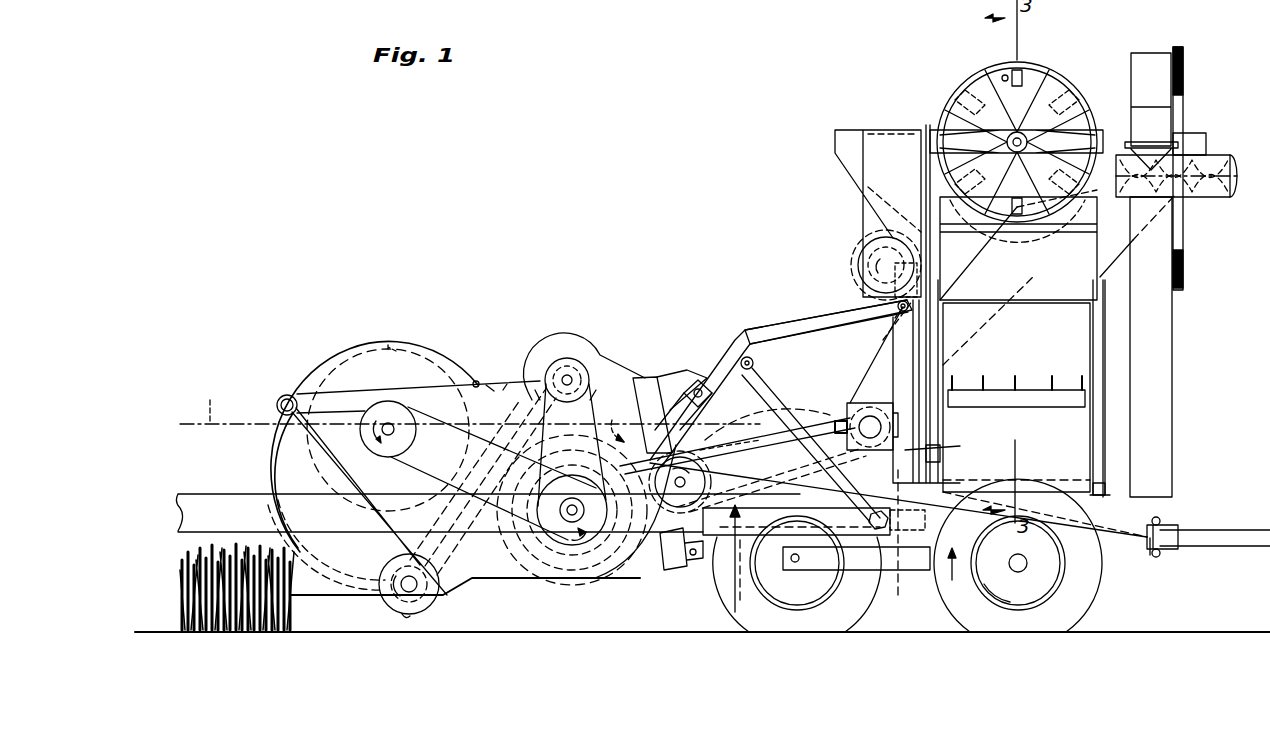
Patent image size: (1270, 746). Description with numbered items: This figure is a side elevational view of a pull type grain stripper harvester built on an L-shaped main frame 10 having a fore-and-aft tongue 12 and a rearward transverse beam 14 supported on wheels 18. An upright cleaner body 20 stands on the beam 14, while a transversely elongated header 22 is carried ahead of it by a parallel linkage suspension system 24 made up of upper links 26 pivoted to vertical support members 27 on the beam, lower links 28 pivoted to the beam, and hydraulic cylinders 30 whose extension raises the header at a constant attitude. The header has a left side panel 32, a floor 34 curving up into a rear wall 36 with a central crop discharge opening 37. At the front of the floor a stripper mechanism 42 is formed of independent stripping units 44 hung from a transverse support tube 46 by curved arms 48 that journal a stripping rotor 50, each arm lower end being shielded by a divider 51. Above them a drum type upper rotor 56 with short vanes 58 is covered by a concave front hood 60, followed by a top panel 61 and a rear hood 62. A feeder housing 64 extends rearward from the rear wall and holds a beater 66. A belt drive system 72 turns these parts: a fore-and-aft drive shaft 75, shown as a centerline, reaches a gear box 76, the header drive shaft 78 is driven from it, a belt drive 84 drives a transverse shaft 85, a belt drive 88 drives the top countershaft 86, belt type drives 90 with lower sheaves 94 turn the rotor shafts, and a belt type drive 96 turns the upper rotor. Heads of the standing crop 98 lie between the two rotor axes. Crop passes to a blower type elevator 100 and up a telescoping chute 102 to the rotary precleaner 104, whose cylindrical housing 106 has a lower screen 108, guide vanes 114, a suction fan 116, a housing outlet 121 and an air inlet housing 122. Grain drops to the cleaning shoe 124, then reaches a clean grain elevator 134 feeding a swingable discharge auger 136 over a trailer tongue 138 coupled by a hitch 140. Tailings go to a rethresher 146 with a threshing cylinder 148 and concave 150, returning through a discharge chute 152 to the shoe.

The main frame 10 is at (959, 571).
The tongue 12 is at (214, 510).
The transverse beam 14 is at (903, 566).
The wheels 18 is at (1087, 584).
The cleaner body 20 is at (1140, 328).
The header 22 is at (620, 338).
The suspension system 24 is at (754, 326).
The upper links 26 is at (834, 312).
The support members 27 is at (900, 338).
The lower links 28 is at (702, 568).
The hydraulic cylinders 30 is at (790, 392).
The left side panel 32 is at (496, 378).
The floor 34 is at (490, 592).
The rear wall 36 is at (626, 392).
The crop discharge opening 37 is at (611, 419).
The stripper mechanism 42 is at (357, 615).
The stripping units 44 is at (433, 626).
The support tube 46 is at (284, 398).
The arms 48 is at (248, 488).
The stripping rotor 50 is at (452, 618).
The divider 51 is at (320, 590).
The upper rotor 56 is at (381, 346).
The vanes 58 is at (411, 344).
The front hood 60 is at (349, 338).
The top panel 61 is at (513, 364).
The rear hood 62 is at (590, 346).
The feeder housing 64 is at (706, 379).
The beater 66 is at (716, 434).
The drive system 72 is at (734, 596).
The drive shaft 75 is at (210, 400).
The gear box 76 is at (940, 448).
The header drive shaft 78 is at (698, 508).
The belt drive 84 is at (618, 532).
The transverse shaft 85 is at (557, 560).
The top countershaft 86 is at (566, 358).
The belt drive 88 is at (512, 404).
The belt type drives 90 is at (456, 551).
The lower sheave 94 is at (397, 627).
The belt type drive 96 is at (419, 430).
The standing crop 98 is at (173, 580).
The blower type elevator 100 is at (820, 408).
The chute 102 is at (865, 364).
The rotary type precleaner 104 is at (1044, 52).
The housing 106 is at (972, 74).
The screen 108 is at (919, 206).
The guide vanes 114 is at (1005, 60).
The suction type fan 116 is at (1050, 86).
The housing outlet 121 is at (1078, 112).
The air inlet housing 122 is at (848, 138).
The cleaning shoe 124 is at (1000, 384).
The clean grain elevator 134 is at (1179, 256).
The discharge auger 136 is at (1198, 198).
The tongue 138 is at (1210, 530).
The hitch 140 is at (1161, 552).
The tailings rethresher 146 is at (857, 250).
The threshing cylinder 148 is at (852, 262).
The concave 150 is at (880, 278).
The discharge chute 152 is at (975, 246).